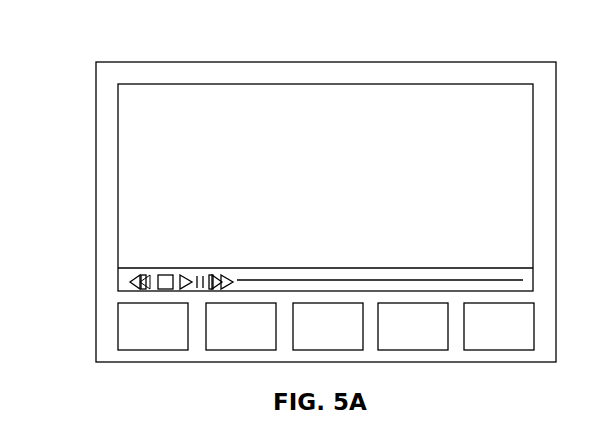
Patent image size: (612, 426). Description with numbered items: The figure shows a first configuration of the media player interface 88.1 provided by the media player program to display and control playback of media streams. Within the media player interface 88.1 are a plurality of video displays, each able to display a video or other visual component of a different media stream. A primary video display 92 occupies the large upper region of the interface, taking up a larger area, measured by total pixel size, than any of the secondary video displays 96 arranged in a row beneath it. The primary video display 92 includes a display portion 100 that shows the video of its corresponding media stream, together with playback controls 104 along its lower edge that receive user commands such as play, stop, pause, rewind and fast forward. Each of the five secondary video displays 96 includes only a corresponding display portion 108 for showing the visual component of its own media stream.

The media player interface 88.1 is at (121, 43).
The primary video display 92 is at (453, 83).
The display portion 100 is at (323, 186).
The playback controls 104 is at (163, 256).
The secondary video displays 96 is at (412, 350).
The display portion 108 is at (456, 326).